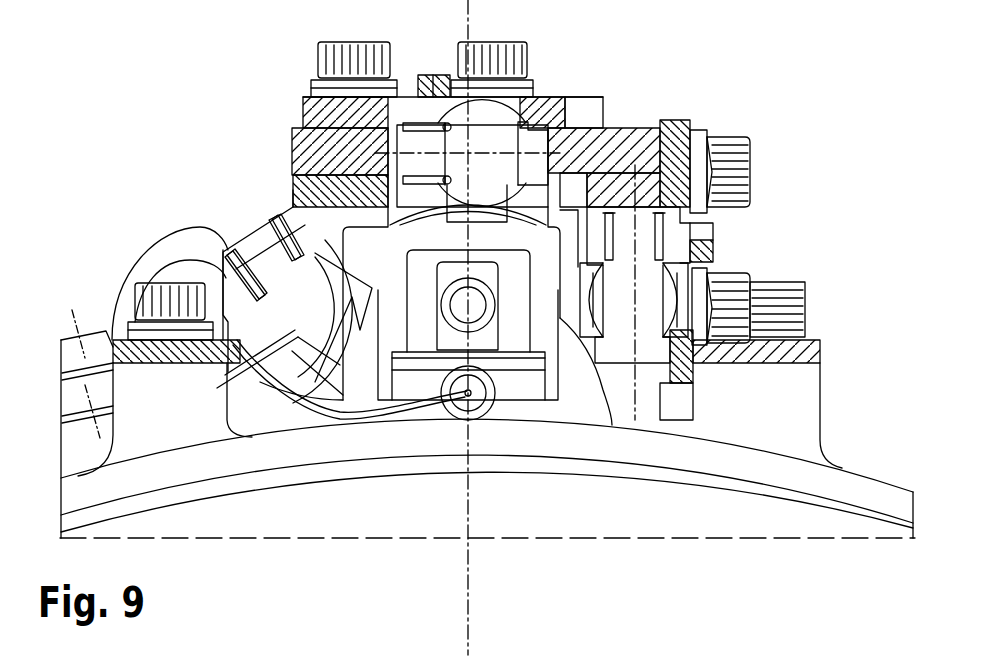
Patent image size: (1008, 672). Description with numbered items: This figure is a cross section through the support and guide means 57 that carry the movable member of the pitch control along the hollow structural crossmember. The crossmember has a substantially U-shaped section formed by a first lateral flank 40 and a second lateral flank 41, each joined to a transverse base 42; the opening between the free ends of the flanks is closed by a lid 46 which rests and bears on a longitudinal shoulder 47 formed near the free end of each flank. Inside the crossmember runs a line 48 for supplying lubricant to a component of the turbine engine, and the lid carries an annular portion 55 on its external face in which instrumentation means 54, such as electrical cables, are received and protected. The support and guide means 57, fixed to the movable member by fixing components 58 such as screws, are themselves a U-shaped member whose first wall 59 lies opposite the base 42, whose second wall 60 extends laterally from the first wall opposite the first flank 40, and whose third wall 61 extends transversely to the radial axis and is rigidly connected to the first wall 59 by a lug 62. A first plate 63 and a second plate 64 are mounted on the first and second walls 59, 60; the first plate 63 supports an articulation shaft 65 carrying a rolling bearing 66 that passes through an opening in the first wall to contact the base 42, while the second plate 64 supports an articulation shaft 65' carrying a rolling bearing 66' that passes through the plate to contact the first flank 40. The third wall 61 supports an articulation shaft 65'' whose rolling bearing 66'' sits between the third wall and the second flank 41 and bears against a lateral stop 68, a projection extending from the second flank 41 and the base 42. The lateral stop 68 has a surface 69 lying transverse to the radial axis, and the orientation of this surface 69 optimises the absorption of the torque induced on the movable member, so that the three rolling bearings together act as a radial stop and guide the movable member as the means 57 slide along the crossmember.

The first lateral flank 40 is at (600, 360).
The second lateral flank 41 is at (345, 355).
The transverse base 42 is at (432, 242).
The lid 46 is at (541, 345).
The longitudinal shoulder 47 is at (403, 375).
The line 48 is at (448, 428).
The instrumentation means 54 is at (447, 402).
The annular portion 55 is at (460, 318).
The support and guide means 57 is at (752, 105).
The fixing components 58 is at (138, 262).
The first wall 59 is at (615, 158).
The second wall 60 is at (650, 182).
The third wall 61 is at (300, 203).
The lug 62 is at (325, 175).
The first plate 63 is at (313, 116).
The second plate 64 is at (667, 140).
The articulation shaft 65 is at (624, 195).
The articulation shaft 65' is at (764, 375).
The articulation shaft 65'' is at (207, 462).
The rolling bearing 66 is at (501, 48).
The rolling bearing 66' is at (767, 292).
The rolling bearing 66'' is at (209, 475).
The lateral stop 68 is at (390, 253).
The surface 69 is at (300, 350).